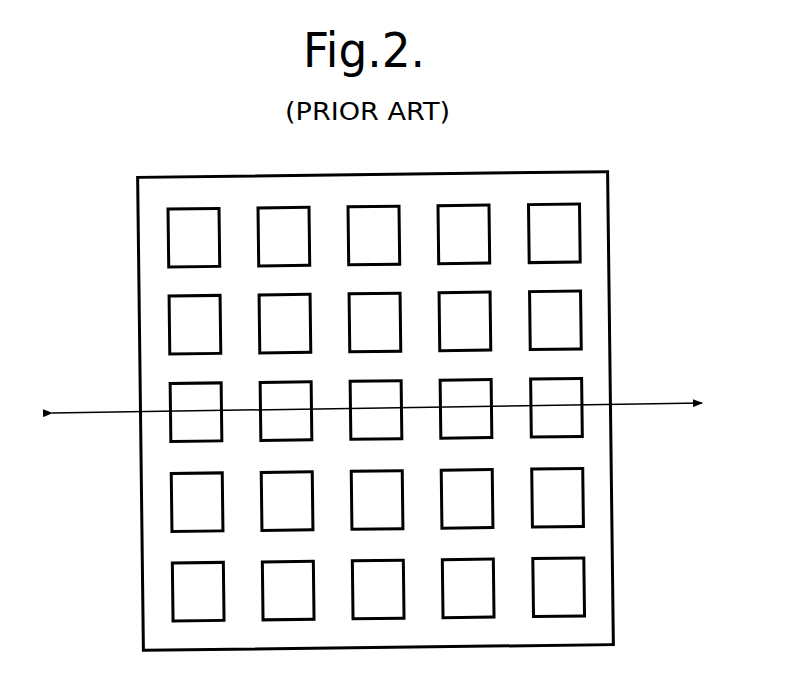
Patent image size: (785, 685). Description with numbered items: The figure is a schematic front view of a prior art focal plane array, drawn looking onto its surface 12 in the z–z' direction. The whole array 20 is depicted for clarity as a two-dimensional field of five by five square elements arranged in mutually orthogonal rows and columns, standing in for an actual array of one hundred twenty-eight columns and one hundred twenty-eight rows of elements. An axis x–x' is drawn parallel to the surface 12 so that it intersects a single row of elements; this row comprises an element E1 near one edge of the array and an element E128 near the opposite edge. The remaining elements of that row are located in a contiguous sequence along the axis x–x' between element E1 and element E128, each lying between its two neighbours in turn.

The electrode array panel 20 is at (88, 232).
The surface 12 is at (513, 182).
The element E1 is at (177, 425).
The element E128 is at (572, 423).